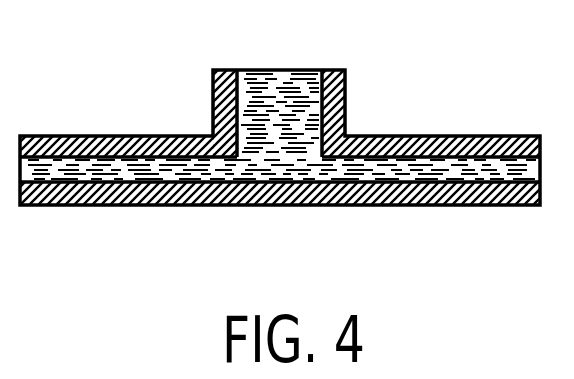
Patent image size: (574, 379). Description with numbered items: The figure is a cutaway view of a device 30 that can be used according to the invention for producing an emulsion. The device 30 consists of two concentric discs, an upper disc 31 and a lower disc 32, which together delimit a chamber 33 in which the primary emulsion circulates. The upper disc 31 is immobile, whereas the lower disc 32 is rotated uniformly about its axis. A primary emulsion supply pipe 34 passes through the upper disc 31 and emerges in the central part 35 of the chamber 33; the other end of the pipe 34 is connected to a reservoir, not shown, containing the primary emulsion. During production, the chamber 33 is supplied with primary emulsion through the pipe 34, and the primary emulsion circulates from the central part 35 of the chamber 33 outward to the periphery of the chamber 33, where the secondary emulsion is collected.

The device 30 is at (397, 126).
The upper disc 31 is at (138, 136).
The lower disc 32 is at (82, 205).
The chamber 33 is at (290, 125).
The primary emulsion supply pipe 34 is at (213, 90).
The central part 35 is at (272, 165).